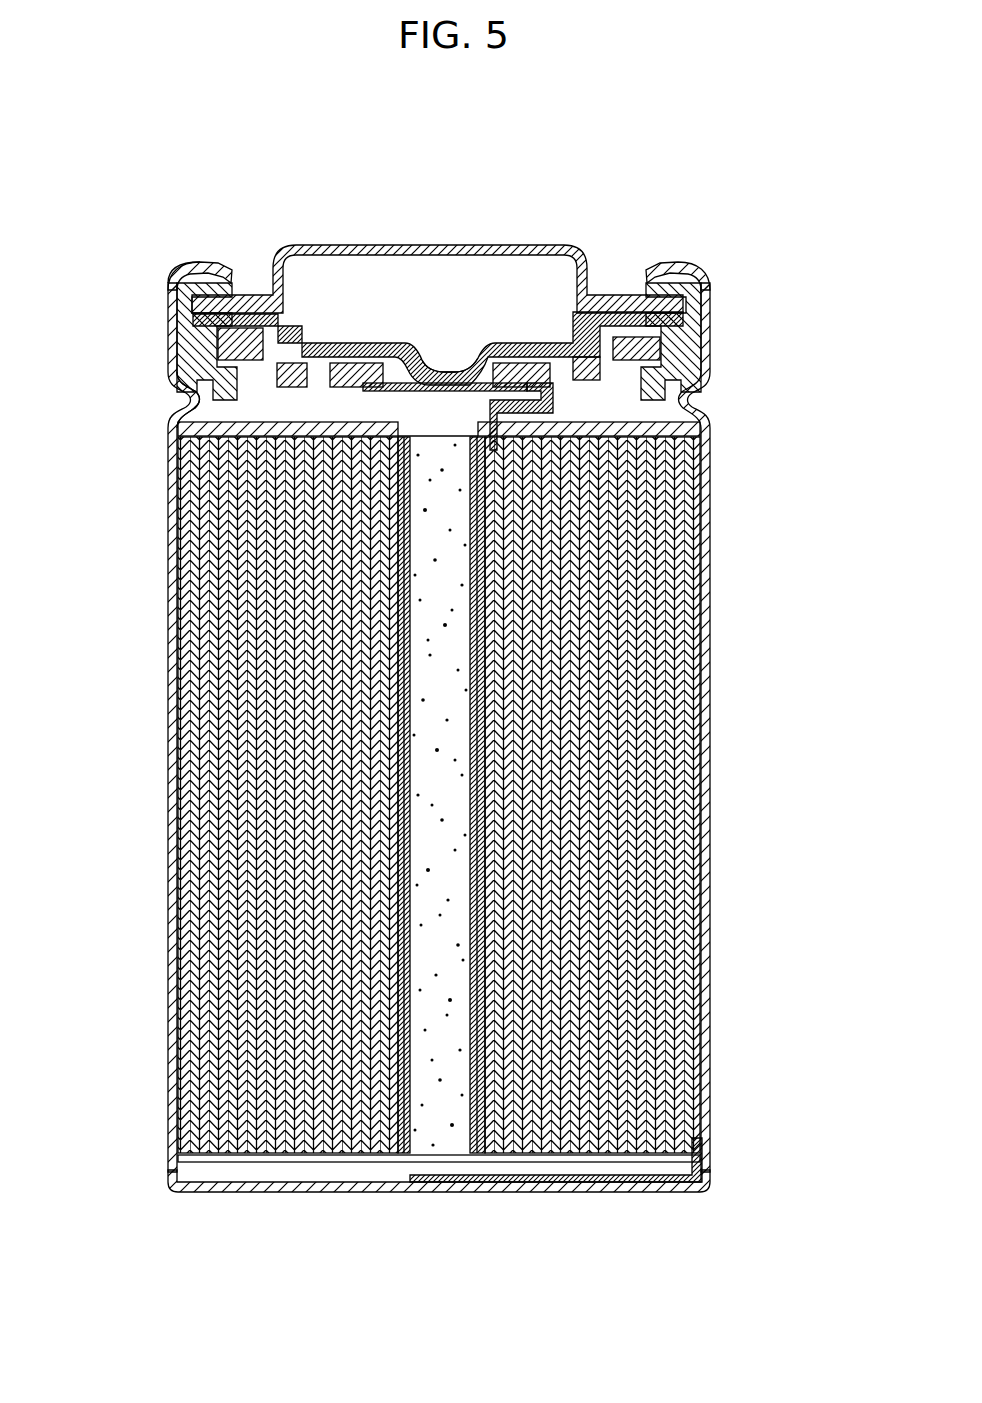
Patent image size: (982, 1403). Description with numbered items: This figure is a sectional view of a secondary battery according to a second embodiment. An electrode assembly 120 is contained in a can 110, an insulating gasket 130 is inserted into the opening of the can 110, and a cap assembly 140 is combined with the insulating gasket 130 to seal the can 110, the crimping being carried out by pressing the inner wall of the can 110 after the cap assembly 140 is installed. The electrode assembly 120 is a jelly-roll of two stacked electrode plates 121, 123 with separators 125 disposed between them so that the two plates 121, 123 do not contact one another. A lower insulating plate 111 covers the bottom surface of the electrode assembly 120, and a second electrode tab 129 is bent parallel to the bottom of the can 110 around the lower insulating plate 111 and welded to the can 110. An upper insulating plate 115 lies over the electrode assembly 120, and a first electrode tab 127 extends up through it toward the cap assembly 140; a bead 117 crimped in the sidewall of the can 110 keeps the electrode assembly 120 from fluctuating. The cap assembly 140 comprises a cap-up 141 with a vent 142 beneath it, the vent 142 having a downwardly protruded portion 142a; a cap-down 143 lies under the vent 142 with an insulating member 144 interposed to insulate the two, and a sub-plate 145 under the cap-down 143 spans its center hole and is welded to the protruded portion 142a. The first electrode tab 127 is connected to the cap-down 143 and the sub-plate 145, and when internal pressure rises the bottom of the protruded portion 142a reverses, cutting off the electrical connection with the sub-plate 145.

The can 110 is at (389, 761).
The lower insulating plate 111 is at (312, 1158).
The upper insulating plate 115 is at (190, 398).
The bead 117 is at (186, 389).
The electrode assembly 120 is at (508, 778).
The electrode plate 121 is at (680, 620).
The electrode plate 123 is at (688, 542).
The separator 125 is at (690, 497).
The first electrode tab 127 is at (555, 402).
The second electrode tab 129 is at (623, 1196).
The insulating gasket 130 is at (681, 278).
The cap assembly 140 is at (570, 120).
The cap-up 141 is at (482, 363).
The vent 142 is at (313, 335).
The protruded portion 142a is at (437, 372).
The cap-down 143 is at (354, 362).
The insulating member 144 is at (268, 300).
The sub-plate 145 is at (520, 352).